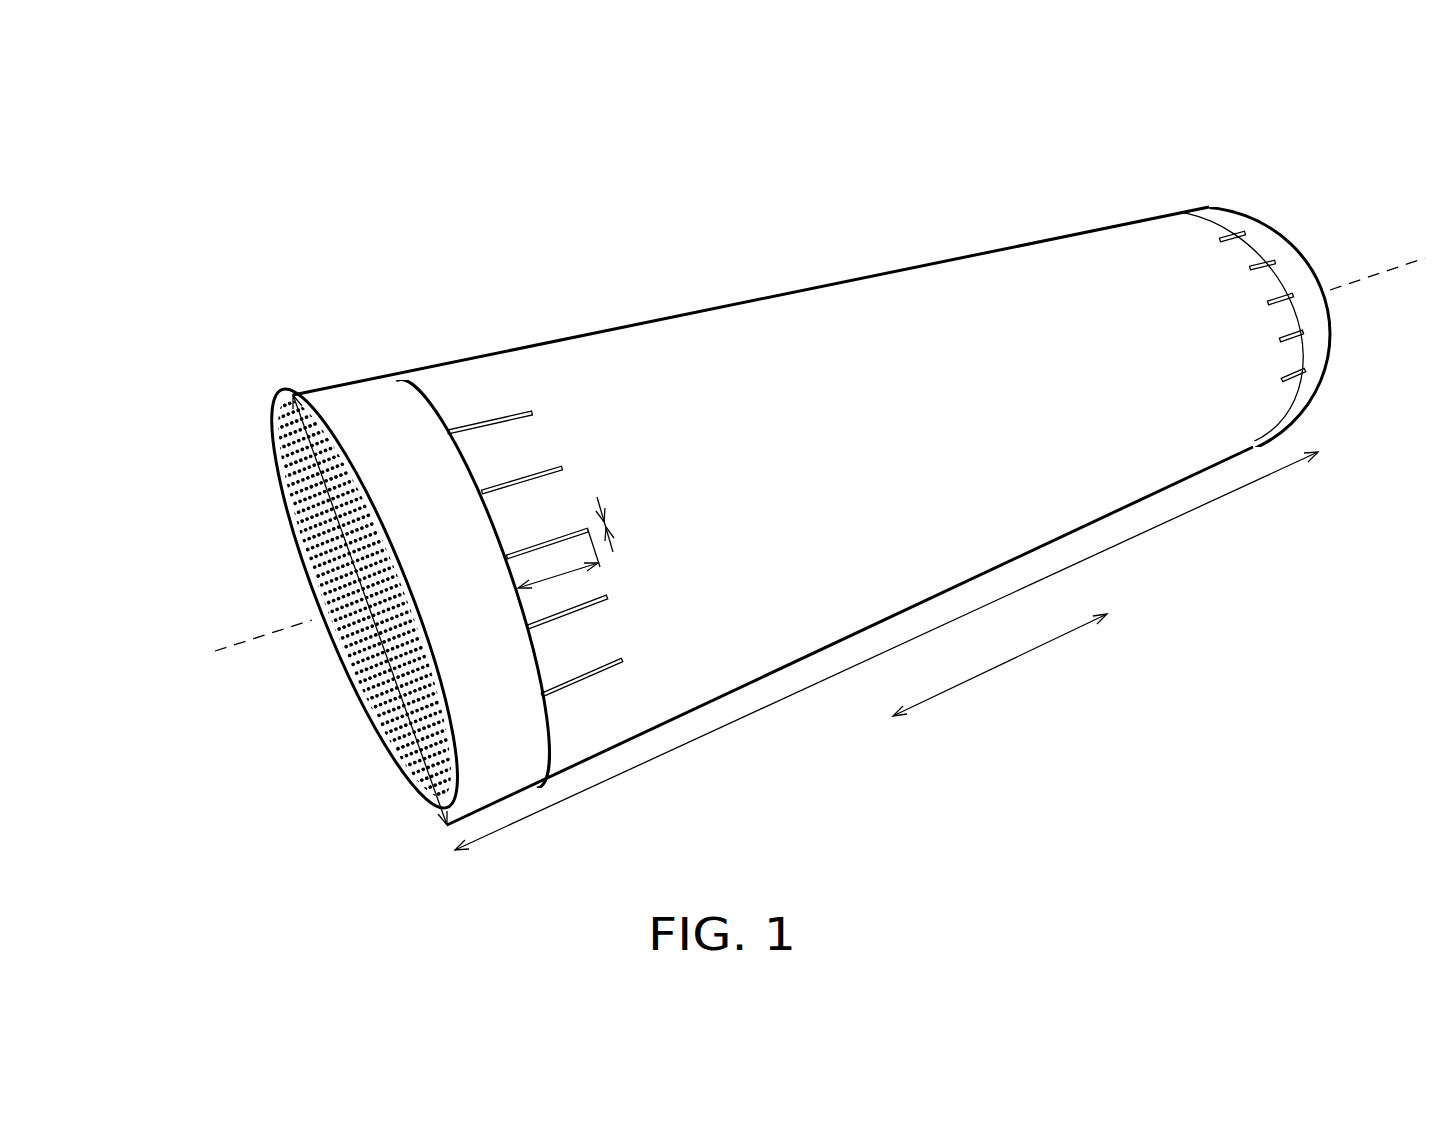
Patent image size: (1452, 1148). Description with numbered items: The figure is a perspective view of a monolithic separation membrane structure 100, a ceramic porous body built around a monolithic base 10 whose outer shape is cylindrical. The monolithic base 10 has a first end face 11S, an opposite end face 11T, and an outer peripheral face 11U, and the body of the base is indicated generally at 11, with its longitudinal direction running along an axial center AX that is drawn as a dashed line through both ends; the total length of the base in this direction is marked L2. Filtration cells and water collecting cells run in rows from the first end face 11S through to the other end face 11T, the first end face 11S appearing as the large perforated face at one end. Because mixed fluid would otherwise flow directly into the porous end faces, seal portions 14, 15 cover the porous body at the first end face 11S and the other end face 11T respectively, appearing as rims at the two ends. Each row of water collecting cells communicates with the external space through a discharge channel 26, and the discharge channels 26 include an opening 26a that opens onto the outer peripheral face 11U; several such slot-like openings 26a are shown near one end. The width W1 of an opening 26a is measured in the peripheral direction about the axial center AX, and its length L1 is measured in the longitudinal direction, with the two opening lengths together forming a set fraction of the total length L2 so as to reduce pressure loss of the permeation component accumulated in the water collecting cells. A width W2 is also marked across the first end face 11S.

The monolithic separation membrane structure 100 is at (307, 178).
The monolithic base 10 is at (1245, 192).
The tubular body 11 is at (795, 355).
The outer peripheral face 11U is at (663, 318).
The end face 11T is at (1293, 240).
The first end face 11S is at (292, 522).
The seal portion 14 is at (347, 408).
The seal portion 15 is at (1322, 357).
The discharge channel 26 is at (492, 427).
The opening 26a is at (503, 417).
The width of the opening W1 is at (610, 528).
The length of the opening L1 is at (558, 580).
The opening width W2 is at (413, 733).
The total length L2 is at (715, 735).
The axial center AX is at (243, 650).